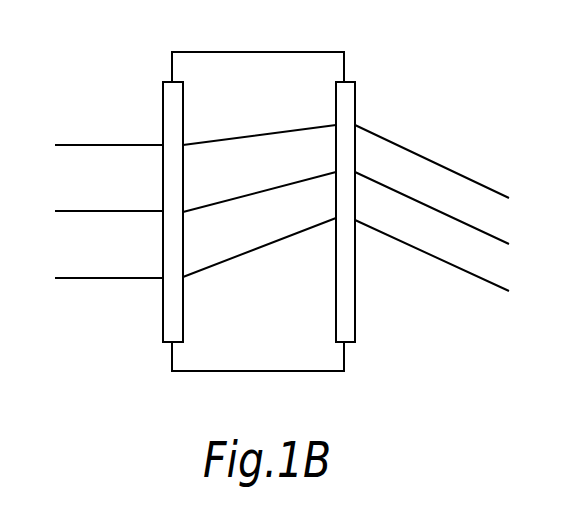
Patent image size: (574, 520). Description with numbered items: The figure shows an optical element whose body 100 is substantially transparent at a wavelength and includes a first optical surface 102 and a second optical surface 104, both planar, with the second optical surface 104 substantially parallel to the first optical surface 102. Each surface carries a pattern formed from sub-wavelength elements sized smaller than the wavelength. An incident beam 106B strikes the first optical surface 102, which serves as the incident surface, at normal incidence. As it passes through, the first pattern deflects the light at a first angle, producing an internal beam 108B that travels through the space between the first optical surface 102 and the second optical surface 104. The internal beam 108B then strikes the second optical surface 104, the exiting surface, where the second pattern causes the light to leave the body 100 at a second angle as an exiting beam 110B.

The body 100 is at (260, 52).
The first optical surface 102 is at (163, 95).
The second optical surface 104 is at (355, 95).
The incident beam 106B is at (112, 278).
The internal beam 108B is at (230, 262).
The exiting beam 110B is at (467, 272).